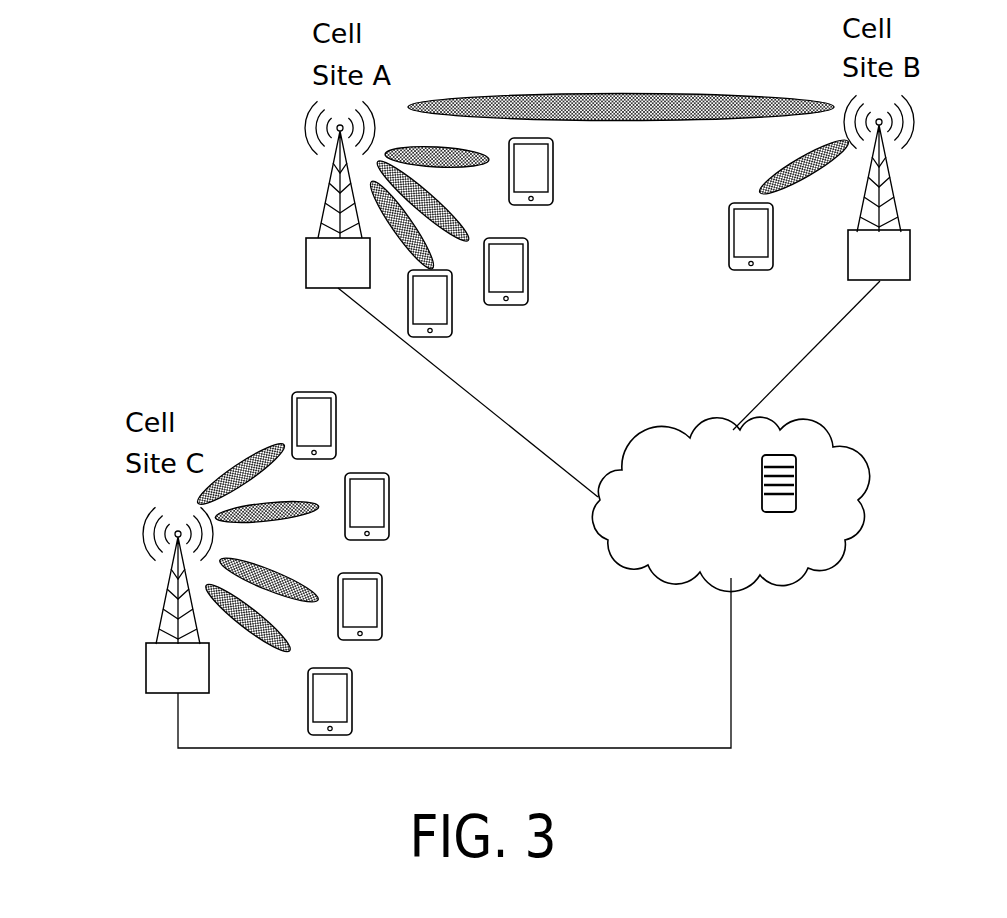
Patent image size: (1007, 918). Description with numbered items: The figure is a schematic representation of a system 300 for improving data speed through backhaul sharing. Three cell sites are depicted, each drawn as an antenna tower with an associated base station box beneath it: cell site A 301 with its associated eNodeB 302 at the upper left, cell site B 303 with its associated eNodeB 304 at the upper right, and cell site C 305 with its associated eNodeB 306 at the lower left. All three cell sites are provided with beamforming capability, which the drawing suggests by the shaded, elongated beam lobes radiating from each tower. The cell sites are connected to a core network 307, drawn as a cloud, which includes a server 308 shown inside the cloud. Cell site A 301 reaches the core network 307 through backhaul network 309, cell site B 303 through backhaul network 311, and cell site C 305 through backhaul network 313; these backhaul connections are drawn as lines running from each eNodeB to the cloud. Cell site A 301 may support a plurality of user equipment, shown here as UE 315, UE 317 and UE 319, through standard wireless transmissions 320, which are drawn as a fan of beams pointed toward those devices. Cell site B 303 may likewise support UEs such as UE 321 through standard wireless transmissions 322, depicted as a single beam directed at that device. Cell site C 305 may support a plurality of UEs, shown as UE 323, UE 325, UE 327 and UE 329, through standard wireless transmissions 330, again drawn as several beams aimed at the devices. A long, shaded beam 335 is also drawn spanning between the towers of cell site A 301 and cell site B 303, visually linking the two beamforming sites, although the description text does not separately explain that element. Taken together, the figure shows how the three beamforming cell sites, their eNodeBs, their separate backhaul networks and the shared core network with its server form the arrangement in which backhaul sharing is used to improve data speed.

The system 300 is at (158, 95).
The cell site A 301 is at (308, 128).
The eNodeB 302 is at (306, 262).
The cell site B 303 is at (912, 120).
The eNodeB 304 is at (912, 255).
The cell site C 305 is at (147, 535).
The eNodeB 306 is at (146, 670).
The core network 307 is at (866, 532).
The server 308 is at (762, 484).
The backhaul network 309 is at (518, 432).
The backhaul network 311 is at (797, 364).
The backhaul network 313 is at (601, 746).
The UE 315 is at (553, 167).
The UE 317 is at (528, 266).
The UE 319 is at (430, 337).
The standard wireless transmissions 320 is at (430, 250).
The UE 321 is at (752, 265).
The standard wireless transmissions 322 is at (818, 150).
The UE 323 is at (335, 420).
The UE 325 is at (390, 505).
The UE 327 is at (382, 605).
The UE 329 is at (352, 700).
The standard wireless transmissions 330 is at (257, 603).
The long-range beam from cell site A to cell site B 335 is at (642, 93).